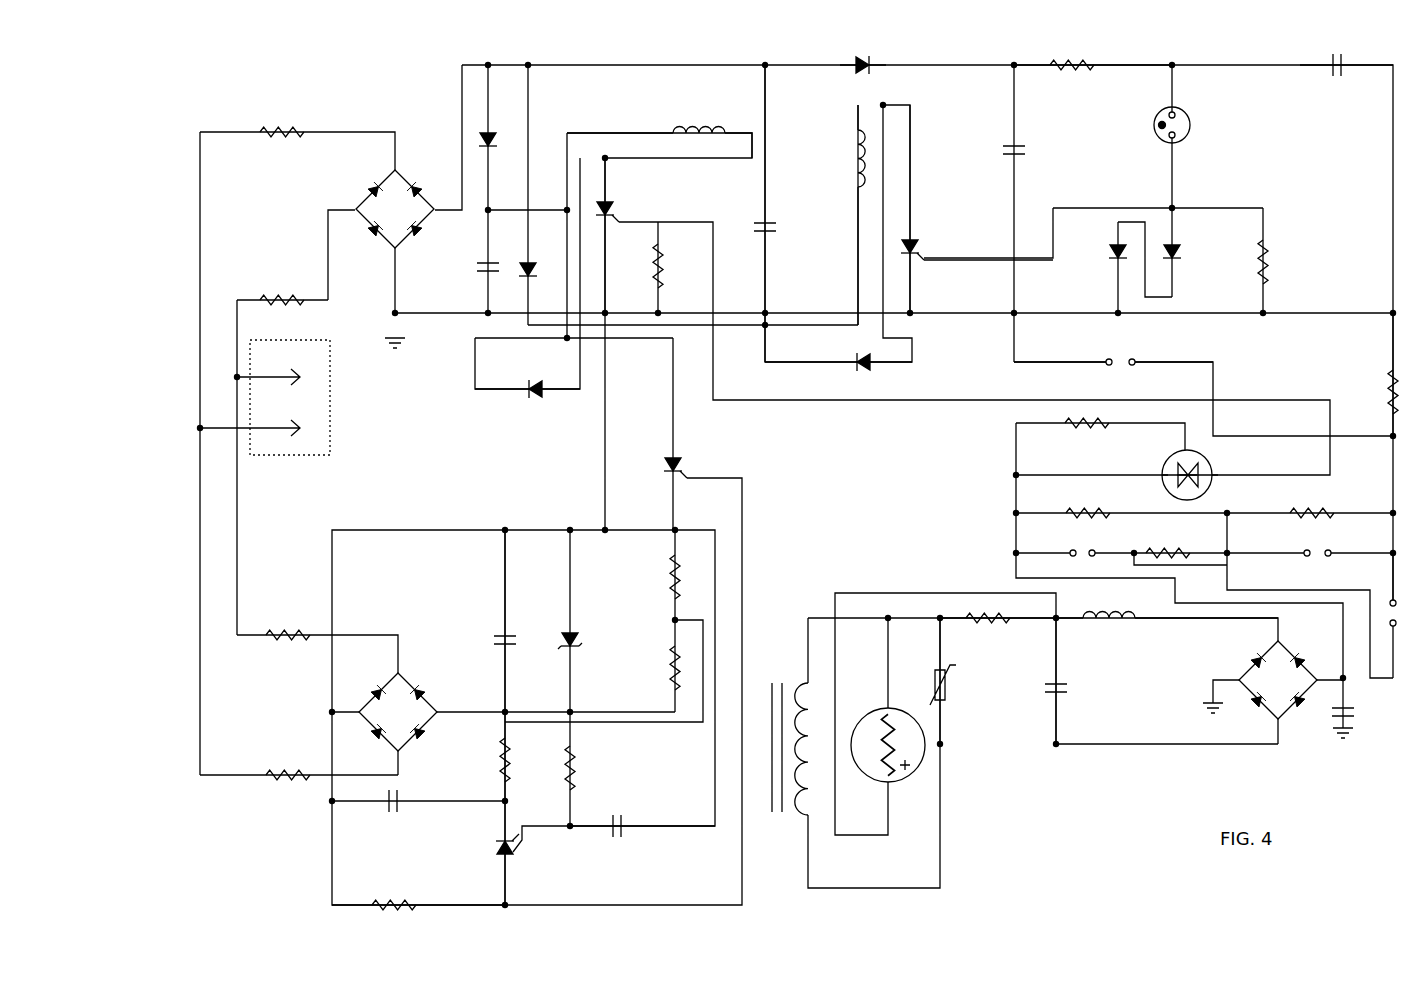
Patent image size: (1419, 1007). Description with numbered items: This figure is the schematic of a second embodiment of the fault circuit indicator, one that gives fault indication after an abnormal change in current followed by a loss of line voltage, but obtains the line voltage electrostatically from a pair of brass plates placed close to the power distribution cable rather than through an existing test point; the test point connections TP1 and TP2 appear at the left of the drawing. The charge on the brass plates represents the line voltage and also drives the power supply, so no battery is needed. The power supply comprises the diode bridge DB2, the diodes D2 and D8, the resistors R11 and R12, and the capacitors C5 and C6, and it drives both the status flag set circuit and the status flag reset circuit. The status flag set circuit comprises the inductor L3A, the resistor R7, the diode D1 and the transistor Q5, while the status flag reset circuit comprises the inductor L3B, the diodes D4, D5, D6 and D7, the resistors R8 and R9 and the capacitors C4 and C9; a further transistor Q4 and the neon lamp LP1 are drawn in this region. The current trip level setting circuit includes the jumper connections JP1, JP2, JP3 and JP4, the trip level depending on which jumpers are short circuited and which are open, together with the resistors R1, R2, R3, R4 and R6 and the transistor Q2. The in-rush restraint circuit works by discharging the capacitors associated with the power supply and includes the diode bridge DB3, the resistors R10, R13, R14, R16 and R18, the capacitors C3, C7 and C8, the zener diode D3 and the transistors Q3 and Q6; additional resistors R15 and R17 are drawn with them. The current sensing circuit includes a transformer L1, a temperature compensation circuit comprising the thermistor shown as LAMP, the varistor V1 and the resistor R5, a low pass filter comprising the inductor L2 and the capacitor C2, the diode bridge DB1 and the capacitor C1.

The resistor R11 is at (297, 136).
The resistor R12 is at (282, 300).
The diode bridge DB2 is at (395, 209).
The diode D2 is at (460, 137).
The capacitor C5 is at (452, 261).
The diode D8 is at (517, 195).
The inductor L3A is at (659, 132).
The transistor Q5 is at (627, 235).
The resistor R7 is at (674, 267).
The diode D1 is at (527, 376).
The test point TP2 is at (275, 366).
The test point TP1 is at (265, 397).
The capacitor C6 is at (793, 213).
The inductor L3B is at (835, 215).
The diode D7 is at (863, 50).
The diode D6 is at (838, 353).
The SCR Q4 is at (977, 209).
The resistor R9 is at (1093, 64).
The capacitor C9 is at (1047, 213).
The neon lamp LP1 is at (1233, 136).
The capacitor C4 is at (1344, 75).
The diode D4 is at (1096, 267).
The diode D5 is at (1189, 252).
The resistor R8 is at (1282, 260).
The jumper connection JP4 is at (1113, 375).
The resistor R3 is at (1371, 374).
The resistor R4 is at (1100, 437).
The transistor Q2 is at (1178, 466).
The resistor R1 is at (1121, 502).
The resistor R2 is at (1310, 502).
The resistor R6 is at (1199, 543).
The jumper connection JP1 is at (1055, 566).
The jumper connection JP2 is at (1346, 566).
The jumper connection JP3 is at (1381, 589).
The transistor Q3 is at (696, 434).
The resistor R18 is at (648, 575).
The resistor R10 is at (653, 666).
The capacitor C7 is at (472, 621).
The zener diode D3 is at (583, 621).
The resistor R13 is at (317, 643).
The diode bridge DB3 is at (398, 712).
The resistor R14 is at (299, 783).
The resistor R16 is at (471, 756).
The resistor 1M R17 is at (592, 769).
The capacitor C8 is at (418, 831).
The resistor 1K R15 is at (418, 892).
The transistor Q6 is at (533, 853).
The capacitor C3 is at (642, 846).
The transformer L1 is at (784, 725).
The lamp LAMP is at (888, 745).
The resistor R5 is at (998, 638).
The varistor V1 is at (960, 681).
The inductor L2 is at (1167, 613).
The capacitor C2 is at (1083, 681).
The diode bridge DB1 is at (1278, 680).
The capacitor C1 is at (1365, 708).